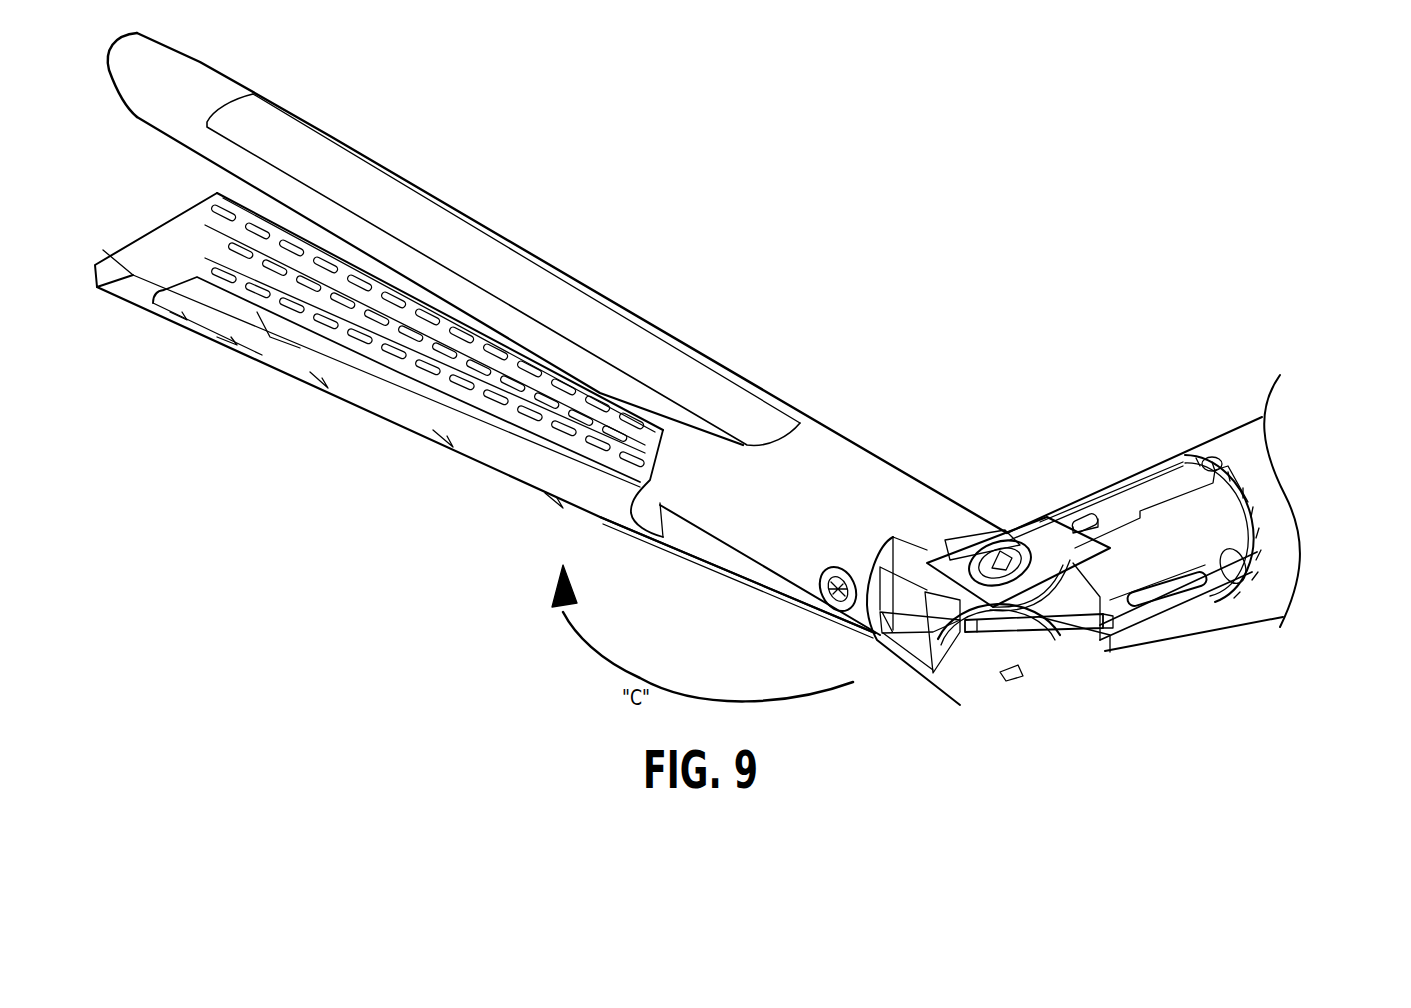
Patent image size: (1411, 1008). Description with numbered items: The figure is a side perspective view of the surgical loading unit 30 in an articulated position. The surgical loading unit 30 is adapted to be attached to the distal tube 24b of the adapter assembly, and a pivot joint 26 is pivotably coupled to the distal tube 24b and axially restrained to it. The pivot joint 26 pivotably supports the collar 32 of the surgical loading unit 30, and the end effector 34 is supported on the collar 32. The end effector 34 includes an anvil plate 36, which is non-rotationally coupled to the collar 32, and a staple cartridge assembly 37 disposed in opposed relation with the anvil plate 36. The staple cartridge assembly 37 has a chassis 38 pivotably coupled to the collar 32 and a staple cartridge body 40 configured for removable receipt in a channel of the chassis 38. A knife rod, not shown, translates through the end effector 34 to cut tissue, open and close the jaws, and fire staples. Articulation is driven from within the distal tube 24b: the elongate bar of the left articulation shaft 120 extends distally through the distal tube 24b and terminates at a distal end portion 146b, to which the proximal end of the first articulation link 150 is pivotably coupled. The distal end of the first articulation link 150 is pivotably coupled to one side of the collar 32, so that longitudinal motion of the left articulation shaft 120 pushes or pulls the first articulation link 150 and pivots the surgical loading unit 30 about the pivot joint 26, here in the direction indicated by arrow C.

The anvil plate 36 is at (557, 283).
The surgical loading unit 30 is at (770, 491).
The chassis 38 is at (379, 380).
The staple cartridge assembly 37 is at (486, 460).
The staple cartridge body 40 is at (440, 367).
The end effector 34 is at (780, 611).
The pivot joint 26 is at (1094, 514).
The distal tube 24b is at (1208, 527).
The distal end portion 146b is at (1186, 639).
The left articulation shaft 120 is at (1165, 623).
The first articulation link 150 is at (1040, 685).
The collar 32 is at (985, 693).